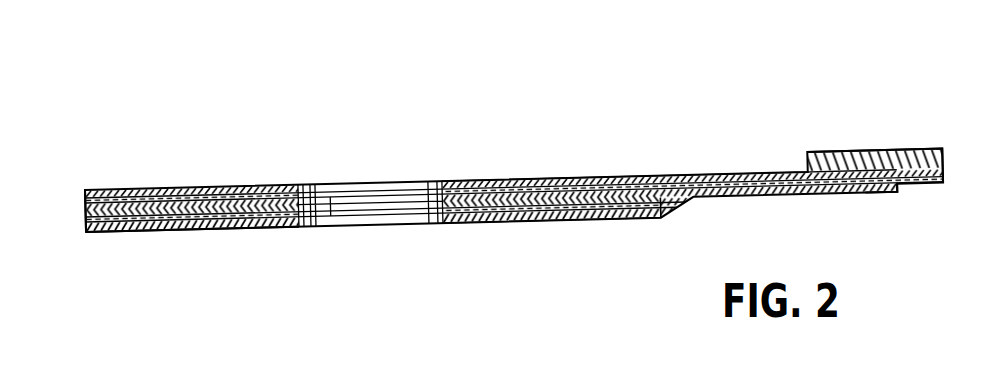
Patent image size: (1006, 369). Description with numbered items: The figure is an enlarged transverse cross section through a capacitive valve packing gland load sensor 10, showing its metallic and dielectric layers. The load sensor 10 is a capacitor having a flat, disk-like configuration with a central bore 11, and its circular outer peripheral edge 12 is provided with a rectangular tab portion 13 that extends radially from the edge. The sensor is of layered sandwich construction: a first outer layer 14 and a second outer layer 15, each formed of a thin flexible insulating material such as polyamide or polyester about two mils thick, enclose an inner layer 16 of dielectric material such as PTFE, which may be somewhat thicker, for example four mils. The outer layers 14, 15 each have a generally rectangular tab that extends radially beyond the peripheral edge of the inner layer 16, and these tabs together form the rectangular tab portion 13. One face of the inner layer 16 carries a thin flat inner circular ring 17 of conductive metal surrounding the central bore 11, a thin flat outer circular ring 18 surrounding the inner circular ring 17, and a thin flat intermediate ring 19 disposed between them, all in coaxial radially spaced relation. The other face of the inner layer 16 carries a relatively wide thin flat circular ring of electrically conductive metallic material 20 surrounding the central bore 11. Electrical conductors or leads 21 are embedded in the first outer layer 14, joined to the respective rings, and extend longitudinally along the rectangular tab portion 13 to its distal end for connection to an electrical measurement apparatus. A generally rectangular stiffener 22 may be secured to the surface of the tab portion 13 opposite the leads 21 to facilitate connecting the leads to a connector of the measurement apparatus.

The valve packing gland load sensor 10 is at (662, 97).
The central bore 11 is at (317, 199).
The circular outer peripheral edge 12 is at (80, 213).
The rectangular tab portion 13 is at (708, 176).
The first outer layer 14 is at (143, 190).
The second outer layer 15 is at (152, 235).
The inner layer 16 is at (192, 207).
The inner circular ring 17 is at (250, 230).
The outer circular ring 18 is at (115, 235).
The intermediate ring 19 is at (193, 228).
The circular ring of electrically conductive metallic material 20 is at (550, 178).
The electrical conductors or leads 21 is at (913, 184).
The stiffener 22 is at (867, 152).